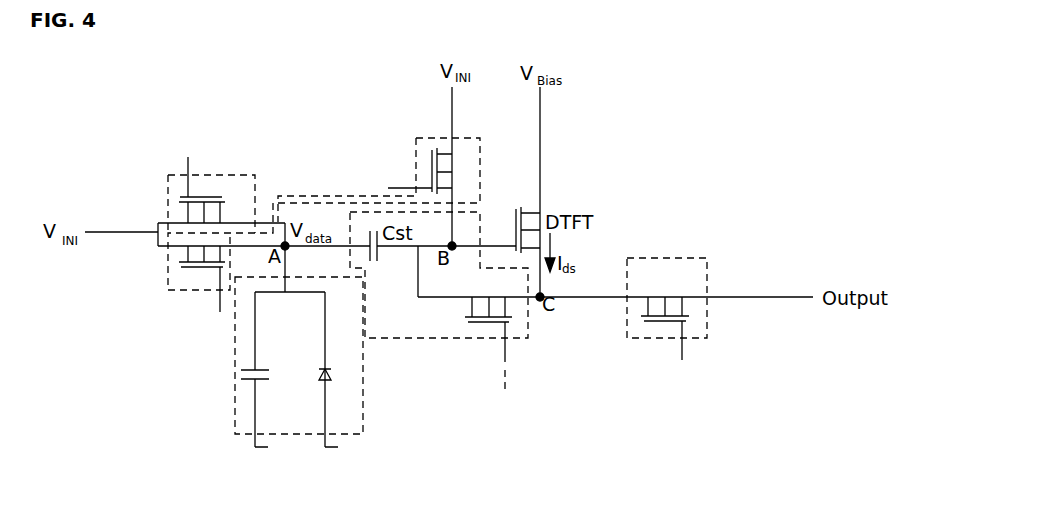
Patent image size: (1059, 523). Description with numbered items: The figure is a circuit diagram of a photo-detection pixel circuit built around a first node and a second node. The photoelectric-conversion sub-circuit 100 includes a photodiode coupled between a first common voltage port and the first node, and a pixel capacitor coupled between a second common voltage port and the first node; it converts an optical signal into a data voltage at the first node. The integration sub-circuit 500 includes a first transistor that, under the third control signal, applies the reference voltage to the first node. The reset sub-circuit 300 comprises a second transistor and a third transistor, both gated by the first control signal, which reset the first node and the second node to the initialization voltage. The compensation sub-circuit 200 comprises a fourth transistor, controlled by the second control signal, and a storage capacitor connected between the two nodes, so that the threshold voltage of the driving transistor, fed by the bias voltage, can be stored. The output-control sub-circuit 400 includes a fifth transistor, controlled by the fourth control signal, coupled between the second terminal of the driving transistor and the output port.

The photoelectric-conversion sub-circuit 100 is at (233, 356).
The compensation sub-circuit 200 is at (435, 340).
The reset sub-circuit 300 is at (465, 138).
The output-control sub-circuit 400 is at (653, 257).
The integration sub-circuit 500 is at (230, 175).